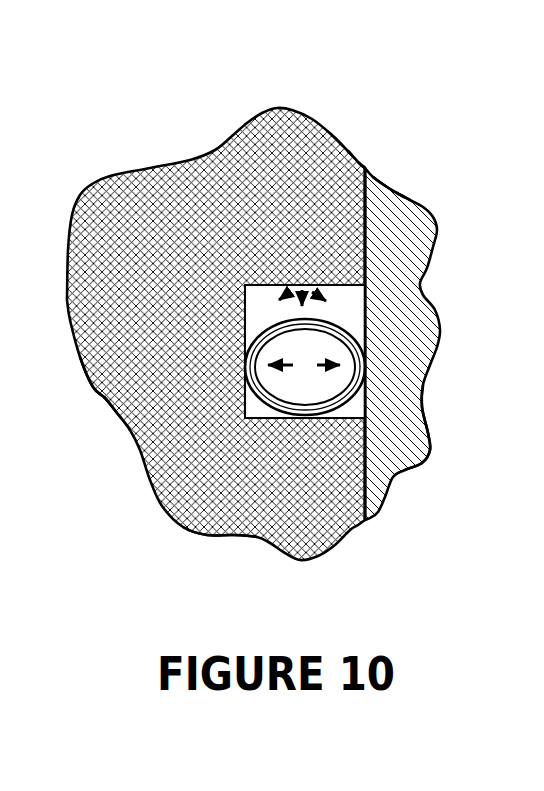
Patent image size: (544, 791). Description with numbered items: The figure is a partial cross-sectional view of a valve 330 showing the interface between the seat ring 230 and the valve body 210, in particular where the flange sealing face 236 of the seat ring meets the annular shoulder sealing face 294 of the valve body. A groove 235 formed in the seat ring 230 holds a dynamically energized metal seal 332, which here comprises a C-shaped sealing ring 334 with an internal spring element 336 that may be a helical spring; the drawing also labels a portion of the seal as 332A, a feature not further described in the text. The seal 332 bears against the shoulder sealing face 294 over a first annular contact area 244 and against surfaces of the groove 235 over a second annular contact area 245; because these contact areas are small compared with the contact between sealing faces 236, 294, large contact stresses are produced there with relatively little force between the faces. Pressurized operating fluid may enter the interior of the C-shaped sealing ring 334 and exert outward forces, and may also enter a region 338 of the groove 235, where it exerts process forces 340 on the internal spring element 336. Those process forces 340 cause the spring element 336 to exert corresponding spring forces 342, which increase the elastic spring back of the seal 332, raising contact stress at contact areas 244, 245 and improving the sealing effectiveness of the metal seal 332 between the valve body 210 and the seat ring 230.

The valve body 210 is at (420, 241).
The seat ring 230 is at (99, 389).
The groove 235 is at (246, 400).
The flange sealing face 236 is at (401, 198).
The first annular contact area 244 is at (373, 359).
The second annular contact area 245 is at (236, 354).
The annular shoulder sealing face 294 is at (365, 168).
The valve 330 is at (104, 134).
The dynamically energized metal seal 332 is at (260, 331).
The inner portion of sealing ring 332A is at (314, 392).
The C-shaped sealing ring 334 is at (366, 343).
The internal spring element 336 is at (336, 322).
The region of groove 338 is at (351, 318).
The process forces 340 is at (290, 292).
The spring forces 342 is at (327, 367).